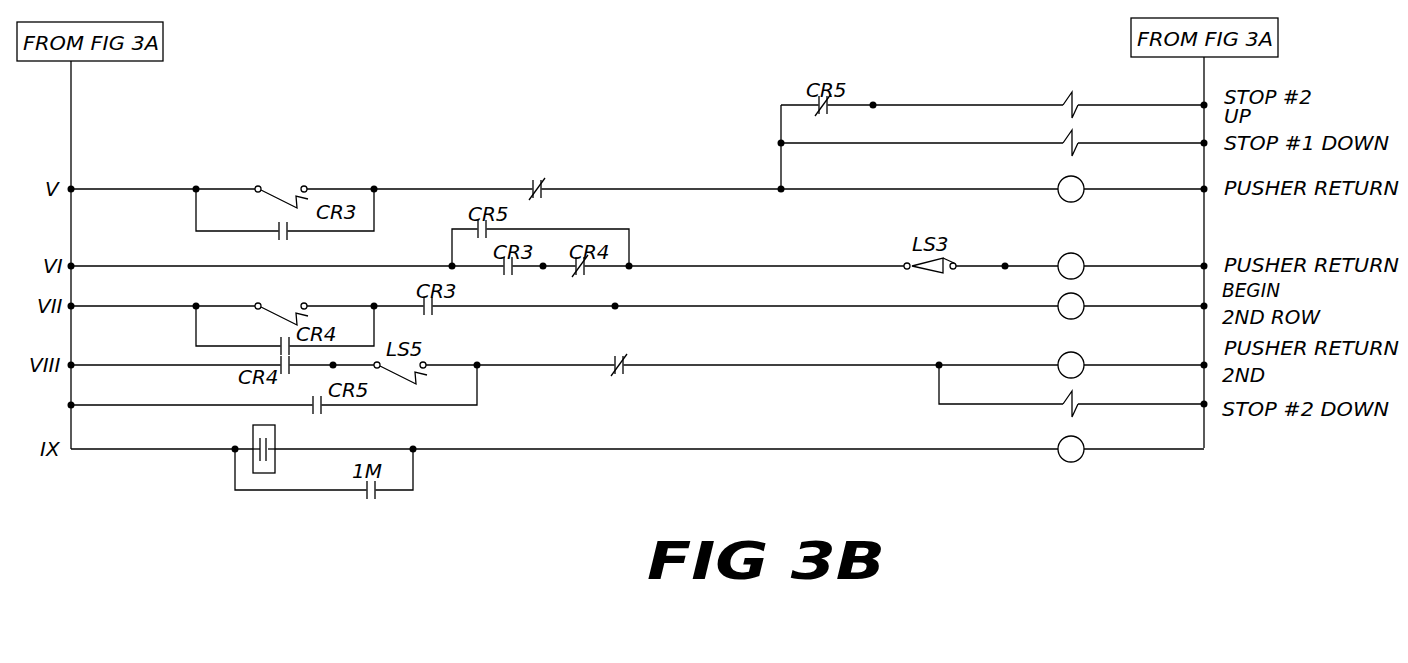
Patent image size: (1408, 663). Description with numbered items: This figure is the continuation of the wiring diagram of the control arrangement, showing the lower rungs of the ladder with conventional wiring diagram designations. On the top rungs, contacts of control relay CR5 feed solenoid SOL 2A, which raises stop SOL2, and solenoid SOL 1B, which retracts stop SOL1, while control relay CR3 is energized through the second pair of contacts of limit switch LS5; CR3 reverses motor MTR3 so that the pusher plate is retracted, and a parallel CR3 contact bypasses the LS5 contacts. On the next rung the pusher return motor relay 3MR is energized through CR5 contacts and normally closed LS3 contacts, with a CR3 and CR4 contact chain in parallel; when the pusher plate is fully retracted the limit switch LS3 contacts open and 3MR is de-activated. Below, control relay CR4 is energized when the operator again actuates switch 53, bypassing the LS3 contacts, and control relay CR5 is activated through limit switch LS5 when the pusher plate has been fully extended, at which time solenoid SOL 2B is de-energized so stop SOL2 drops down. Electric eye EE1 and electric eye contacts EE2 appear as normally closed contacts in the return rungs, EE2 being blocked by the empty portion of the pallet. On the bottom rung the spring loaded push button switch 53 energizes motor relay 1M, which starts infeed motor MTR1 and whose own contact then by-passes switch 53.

The switch 53 is at (275, 460).
The control relay CR3 is at (1097, 183).
The control relay CR4 is at (1096, 300).
The control relay CR5 is at (1096, 358).
The motor relay 3MR is at (1097, 261).
The motor relay 1M is at (1087, 443).
The limit switch LS3 is at (281, 302).
The limit switch LS5 is at (281, 185).
The electric eye EE1 is at (538, 181).
The electric eye contacts EE2 is at (625, 356).
The stop solenoid 2A is at (1114, 99).
The stop solenoid 1B is at (1114, 137).
The stop solenoid 2B is at (1111, 398).